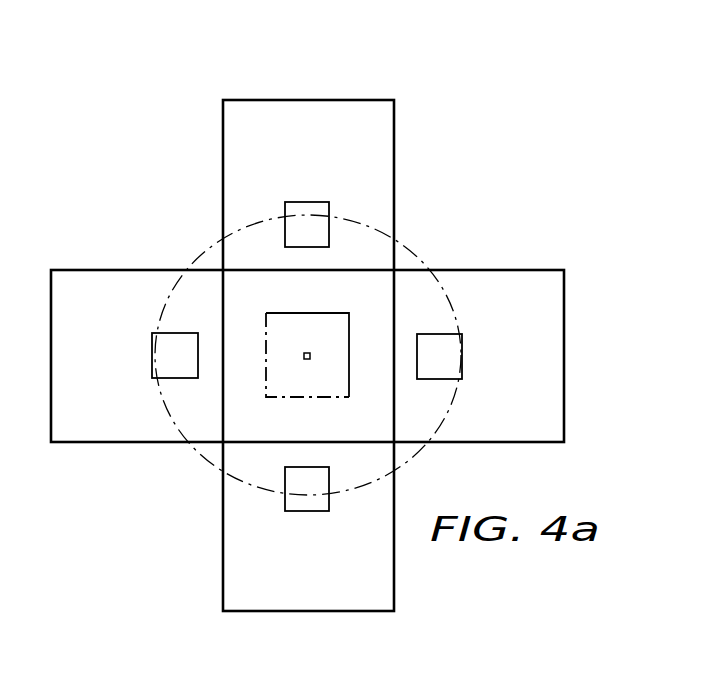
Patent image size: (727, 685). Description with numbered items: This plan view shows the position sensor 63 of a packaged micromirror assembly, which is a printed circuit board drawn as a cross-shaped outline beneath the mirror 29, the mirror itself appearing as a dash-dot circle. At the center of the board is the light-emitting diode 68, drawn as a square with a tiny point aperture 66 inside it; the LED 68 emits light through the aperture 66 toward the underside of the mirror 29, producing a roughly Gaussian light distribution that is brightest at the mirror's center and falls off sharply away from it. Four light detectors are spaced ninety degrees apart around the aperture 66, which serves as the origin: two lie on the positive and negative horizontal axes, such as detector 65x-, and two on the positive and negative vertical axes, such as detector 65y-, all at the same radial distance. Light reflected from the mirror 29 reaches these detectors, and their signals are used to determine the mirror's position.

The position sensor 63 is at (394, 145).
The mirror 29 is at (205, 461).
The light-emitting diode (LED) 68 is at (350, 375).
The point aperture 66 is at (306, 350).
The light detector 65x- is at (173, 332).
The light detector 65y- is at (310, 512).